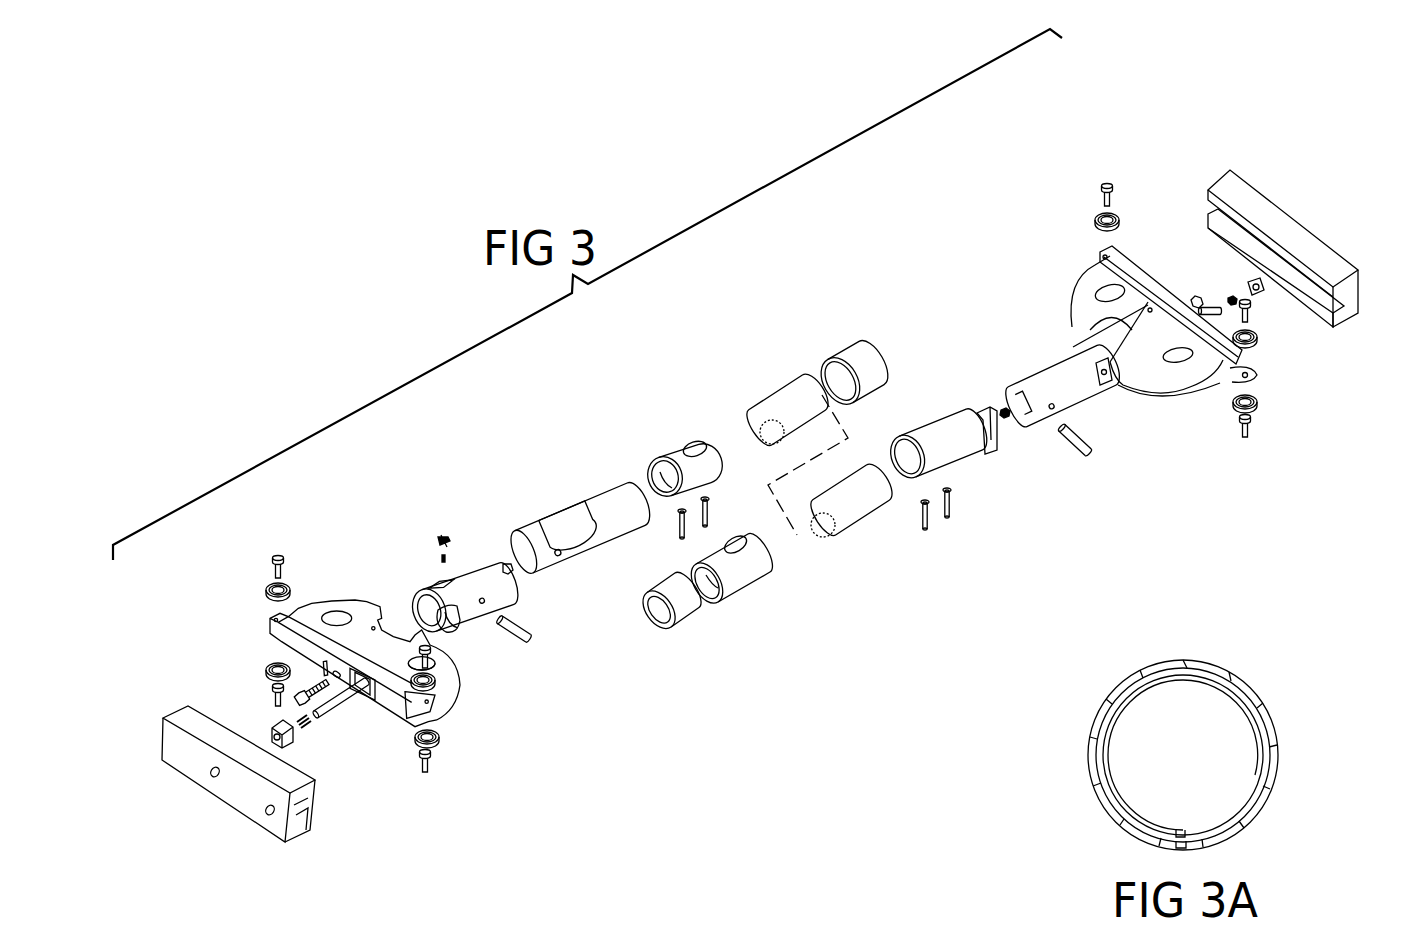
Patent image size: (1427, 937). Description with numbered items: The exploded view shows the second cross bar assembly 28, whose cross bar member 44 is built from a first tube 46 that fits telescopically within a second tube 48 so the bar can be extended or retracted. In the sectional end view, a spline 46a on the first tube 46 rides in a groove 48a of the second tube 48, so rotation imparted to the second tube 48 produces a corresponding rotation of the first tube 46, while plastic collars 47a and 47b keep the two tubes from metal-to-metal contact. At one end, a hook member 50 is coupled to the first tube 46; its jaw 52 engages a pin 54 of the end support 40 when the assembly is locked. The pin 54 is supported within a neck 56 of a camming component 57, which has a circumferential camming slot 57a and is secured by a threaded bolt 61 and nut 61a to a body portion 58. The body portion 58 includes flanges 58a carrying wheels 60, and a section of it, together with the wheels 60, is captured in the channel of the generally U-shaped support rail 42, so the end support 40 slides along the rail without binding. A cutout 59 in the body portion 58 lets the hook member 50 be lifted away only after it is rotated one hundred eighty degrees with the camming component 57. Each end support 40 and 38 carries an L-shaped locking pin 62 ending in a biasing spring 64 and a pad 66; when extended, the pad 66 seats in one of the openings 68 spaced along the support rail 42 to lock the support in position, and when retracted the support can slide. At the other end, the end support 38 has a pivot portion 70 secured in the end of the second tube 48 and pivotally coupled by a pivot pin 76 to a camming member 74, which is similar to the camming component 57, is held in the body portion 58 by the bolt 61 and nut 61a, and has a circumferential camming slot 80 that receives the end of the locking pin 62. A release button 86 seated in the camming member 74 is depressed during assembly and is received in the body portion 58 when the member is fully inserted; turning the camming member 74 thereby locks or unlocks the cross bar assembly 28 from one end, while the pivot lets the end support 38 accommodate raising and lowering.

In FIG. 3, the second cross bar assembly 28 is at (688, 370).
In FIG. 3, the end support 38 is at (463, 715).
In FIG. 3, the end support 40 is at (1167, 315).
In FIG. 3, the support rail 42 is at (323, 807).
In FIG. 3, the cross bar member 44 is at (787, 397).
In FIG. 3A, the cross bar member 44 is at (1092, 703).
In FIG. 3, the first tube 46 is at (753, 590).
In FIG. 3A, the first tube 46 is at (1260, 757).
In FIG. 3, the spline 46a is at (713, 587).
In FIG. 3A, the spline 46a is at (1180, 843).
In FIG. 3, the collar 47a is at (857, 350).
In FIG. 3, the collar 47b is at (693, 607).
In FIG. 3, the second tube 48 is at (670, 443).
In FIG. 3A, the second tube 48 is at (1255, 700).
In FIG. 3, the groove 48a is at (667, 477).
In FIG. 3A, the groove 48a is at (1180, 843).
In FIG. 3, the hook member 50 is at (953, 468).
In FIG. 3, the jaw 52 is at (995, 425).
In FIG. 3, the pin 54 is at (1090, 450).
In FIG. 3, the neck 56 is at (1070, 367).
In FIG. 3, the camming component 57 is at (1071, 362).
In FIG. 3, the circumferential camming slot 57a is at (1117, 387).
In FIG. 3, the body portion 58 is at (1252, 378).
In FIG. 3, the flanges 58a is at (1100, 250).
In FIG. 3, the cutout 59 is at (1077, 287).
In FIG. 3, the wheels 60 is at (267, 667).
In FIG. 3, the threaded bolt 61 is at (300, 700).
In FIG. 3, the nut 61a is at (999, 410).
In FIG. 3, the L-shaped locking pin 62 is at (323, 717).
In FIG. 3, the biasing spring 64 is at (1257, 310).
In FIG. 3, the pad 66 is at (293, 737).
In FIG. 3, the openings 68 is at (270, 812).
In FIG. 3, the pivot portion 70 is at (563, 517).
In FIG. 3, the camming member 74 is at (413, 568).
In FIG. 3, the pivot pin 76 is at (527, 630).
In FIG. 3, the circumferential camming slot 80 is at (455, 625).
In FIG. 3, the release button 86 is at (443, 537).